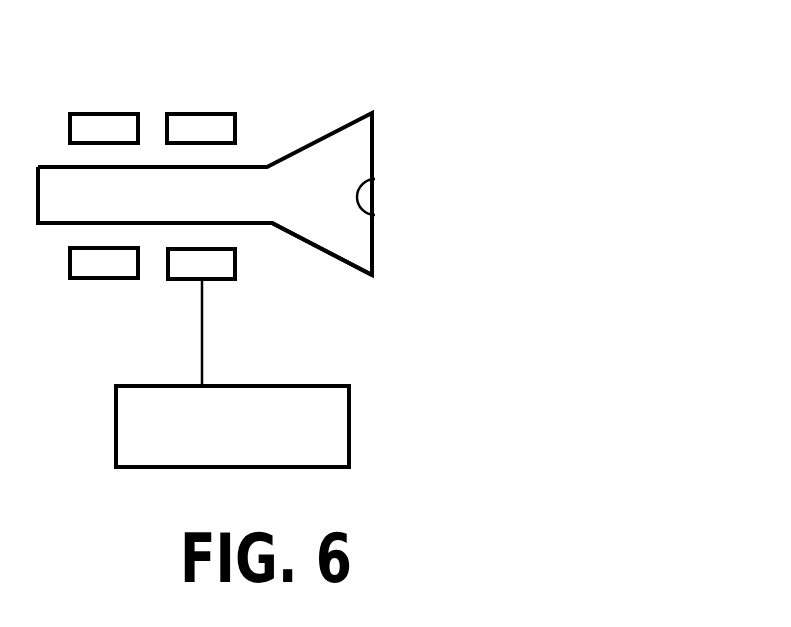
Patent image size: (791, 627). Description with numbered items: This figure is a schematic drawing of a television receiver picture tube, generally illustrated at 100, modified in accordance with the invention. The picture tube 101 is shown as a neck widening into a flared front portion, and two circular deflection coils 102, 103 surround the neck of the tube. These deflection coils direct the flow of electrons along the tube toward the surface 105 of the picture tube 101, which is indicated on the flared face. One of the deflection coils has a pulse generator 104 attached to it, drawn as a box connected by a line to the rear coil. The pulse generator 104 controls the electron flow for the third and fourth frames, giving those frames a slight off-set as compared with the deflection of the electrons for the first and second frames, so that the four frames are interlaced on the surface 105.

The television receiver picture tube 100 is at (334, 96).
The picture tube 101 is at (345, 262).
The deflection coil 102 is at (92, 113).
The deflection coil 103 is at (203, 113).
The pulse generator 104 is at (352, 440).
The surface 105 is at (379, 206).